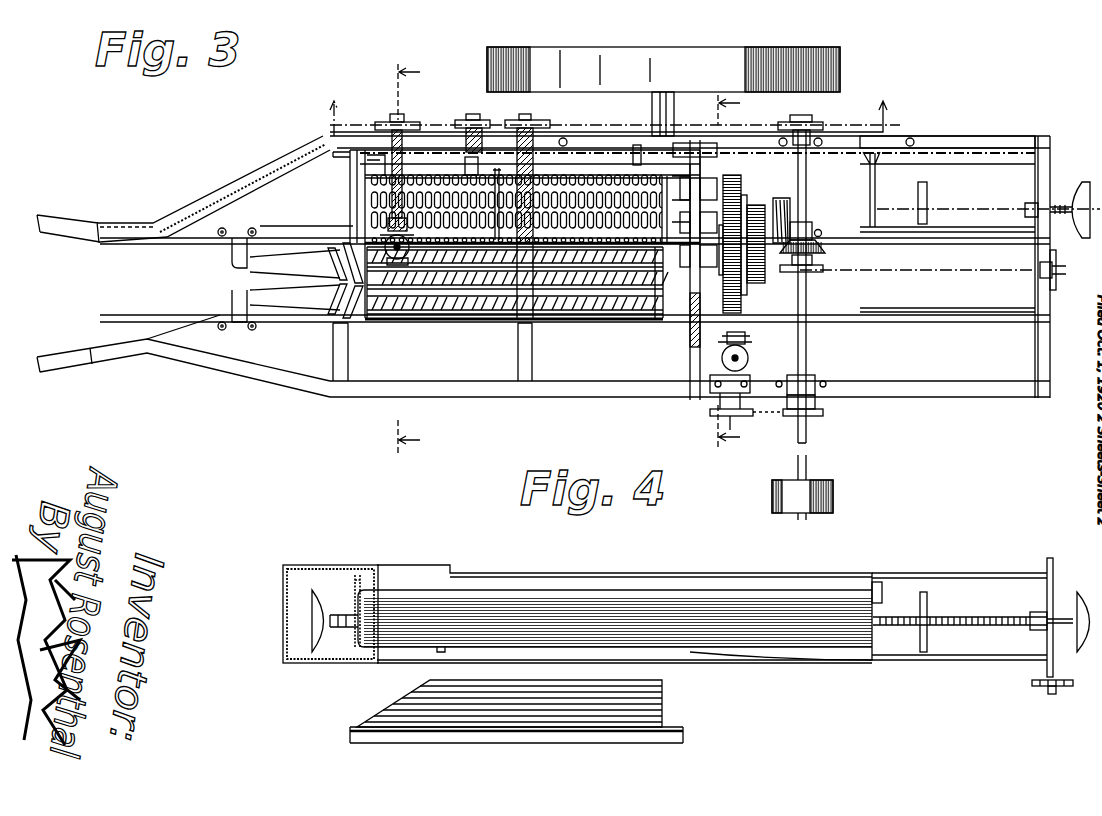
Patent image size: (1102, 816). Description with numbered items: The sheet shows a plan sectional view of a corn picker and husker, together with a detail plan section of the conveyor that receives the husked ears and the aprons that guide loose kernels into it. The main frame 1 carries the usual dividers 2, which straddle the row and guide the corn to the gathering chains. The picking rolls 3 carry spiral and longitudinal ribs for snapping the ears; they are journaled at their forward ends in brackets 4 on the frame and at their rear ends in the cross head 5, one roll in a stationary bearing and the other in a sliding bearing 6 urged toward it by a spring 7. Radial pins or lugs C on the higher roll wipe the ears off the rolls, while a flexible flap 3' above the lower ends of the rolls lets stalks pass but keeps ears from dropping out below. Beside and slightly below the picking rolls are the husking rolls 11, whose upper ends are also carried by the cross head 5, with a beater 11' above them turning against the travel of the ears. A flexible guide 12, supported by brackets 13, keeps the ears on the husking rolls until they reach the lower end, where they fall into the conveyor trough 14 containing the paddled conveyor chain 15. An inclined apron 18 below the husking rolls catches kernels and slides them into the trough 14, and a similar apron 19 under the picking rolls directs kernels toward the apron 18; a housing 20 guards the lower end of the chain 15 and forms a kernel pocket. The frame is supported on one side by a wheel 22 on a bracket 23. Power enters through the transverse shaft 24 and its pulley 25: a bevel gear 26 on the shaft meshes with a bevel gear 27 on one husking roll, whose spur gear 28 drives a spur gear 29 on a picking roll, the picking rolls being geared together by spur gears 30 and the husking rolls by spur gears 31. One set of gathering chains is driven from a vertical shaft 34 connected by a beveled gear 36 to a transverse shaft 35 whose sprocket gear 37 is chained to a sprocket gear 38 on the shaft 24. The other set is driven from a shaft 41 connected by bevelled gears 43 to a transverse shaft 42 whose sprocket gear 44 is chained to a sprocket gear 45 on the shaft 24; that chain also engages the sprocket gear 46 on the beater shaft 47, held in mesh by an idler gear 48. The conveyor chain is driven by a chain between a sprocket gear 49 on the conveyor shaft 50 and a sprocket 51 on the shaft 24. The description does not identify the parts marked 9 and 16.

In FIG. 3, the main frame 1 is at (965, 343).
In FIG. 4, the main frame 1 is at (680, 729).
In FIG. 3, the dividers 2 is at (48, 237).
In FIG. 3, the picking rolls 3 is at (295, 277).
In FIG. 3, the flexible flap 3' is at (327, 305).
In FIG. 3, the brackets 4 is at (228, 258).
In FIG. 3, the cross head 5 is at (706, 176).
In FIG. 3, the sliding bearing 6 is at (394, 257).
In FIG. 3, the spring 7 is at (714, 270).
In FIG. 3, the section line 9 is at (612, 104).
In FIG. 3, the husking rolls 11 is at (510, 234).
In FIG. 3, the beater 11' is at (517, 306).
In FIG. 3, the guide 12 is at (497, 170).
In FIG. 3, the brackets 13 is at (446, 150).
In FIG. 3, the conveyor trough 14 is at (988, 177).
In FIG. 4, the conveyor trough 14 is at (905, 663).
In FIG. 3, the conveyor chain 15 is at (972, 206).
In FIG. 4, the conveyor chain 15 is at (990, 617).
In FIG. 3, the lens 16 is at (1080, 180).
In FIG. 4, the lens 16 is at (318, 592).
In FIG. 3, the inclined apron 18 is at (880, 208).
In FIG. 4, the inclined apron 18 is at (755, 605).
In FIG. 3, the apron 19 is at (583, 323).
In FIG. 4, the apron 19 is at (645, 700).
In FIG. 4, the housing 20 is at (283, 610).
In FIG. 3, the wheel 22 is at (764, 48).
In FIG. 3, the bracket 23 is at (650, 103).
In FIG. 3, the transverse shaft 24 is at (812, 352).
In FIG. 3, the pulley 25 is at (828, 484).
In FIG. 3, the bevel gear 26 is at (830, 262).
In FIG. 3, the bevel gear 27 is at (800, 210).
In FIG. 3, the spur gear 28 is at (792, 196).
In FIG. 3, the spur gear 29 is at (765, 283).
In FIG. 3, the spur gears 30 is at (745, 293).
In FIG. 3, the spur gears 31 is at (742, 190).
In FIG. 3, the vertical shaft 34 is at (738, 360).
In FIG. 3, the transverse shaft 35 is at (725, 420).
In FIG. 3, the beveled gear 36 is at (752, 343).
In FIG. 3, the sprocket gear 37 is at (765, 414).
In FIG. 3, the sprocket gear 38 is at (820, 415).
In FIG. 3, the shaft 41 is at (400, 118).
In FIG. 3, the transverse shaft 42 is at (352, 165).
In FIG. 3, the bevelled gears 43 is at (360, 232).
In FIG. 3, the sprocket gear 44 is at (390, 121).
In FIG. 3, the sprocket gear 45 is at (823, 126).
In FIG. 3, the sprocket gear 46 is at (550, 128).
In FIG. 3, the shaft 47 is at (530, 121).
In FIG. 3, the idler gear 48 is at (474, 120).
In FIG. 3, the sprocket gear 49 is at (1040, 270).
In FIG. 4, the sprocket gear 49 is at (1040, 688).
In FIG. 3, the shaft 50 is at (1054, 283).
In FIG. 4, the shaft 50 is at (1054, 694).
In FIG. 3, the sprocket 51 is at (810, 272).
In FIG. 3, the radial pins or lugs C is at (385, 325).